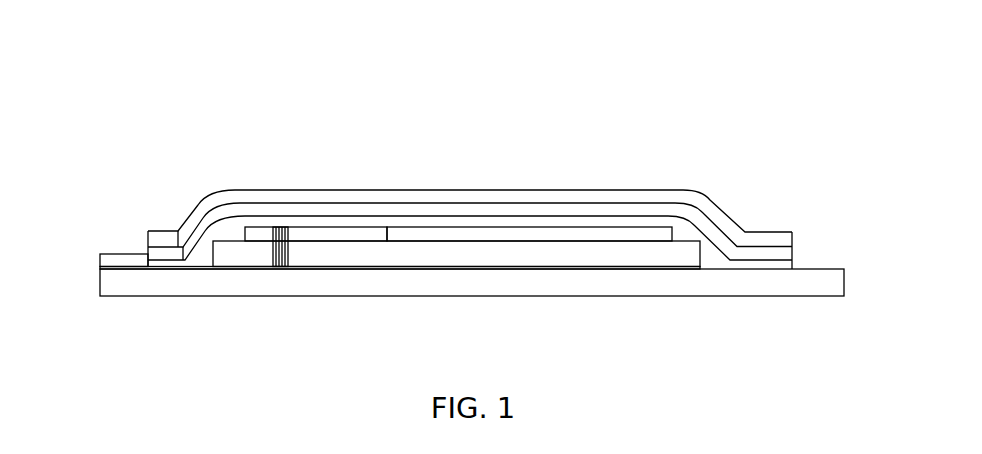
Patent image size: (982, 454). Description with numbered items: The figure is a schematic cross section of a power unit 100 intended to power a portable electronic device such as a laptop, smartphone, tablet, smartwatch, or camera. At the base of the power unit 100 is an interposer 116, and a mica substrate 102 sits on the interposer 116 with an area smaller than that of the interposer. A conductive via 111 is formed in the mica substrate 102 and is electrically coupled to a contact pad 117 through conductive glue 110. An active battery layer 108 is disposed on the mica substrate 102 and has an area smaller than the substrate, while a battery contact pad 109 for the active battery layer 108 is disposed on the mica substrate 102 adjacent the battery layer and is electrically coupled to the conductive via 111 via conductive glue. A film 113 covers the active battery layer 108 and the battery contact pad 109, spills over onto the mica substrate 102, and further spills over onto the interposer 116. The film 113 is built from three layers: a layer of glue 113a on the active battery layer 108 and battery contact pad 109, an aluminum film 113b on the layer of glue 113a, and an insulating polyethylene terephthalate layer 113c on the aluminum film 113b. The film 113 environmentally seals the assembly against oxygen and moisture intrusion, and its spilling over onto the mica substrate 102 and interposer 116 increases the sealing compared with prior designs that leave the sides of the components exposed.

The power unit 100 is at (443, 88).
The mica substrate 102 is at (228, 248).
The active battery layer 108 is at (579, 233).
The battery contact pad 109 is at (340, 233).
The conductive glue 110 is at (100, 268).
The conductive via 111 is at (274, 228).
The film 113 is at (505, 192).
The layer of glue 113a is at (383, 220).
The aluminum film 113b is at (436, 210).
The insulating polyethylene terephthalate (PET) layer 113c is at (493, 195).
The interposer 116 is at (662, 281).
The contact pad 117 is at (122, 257).